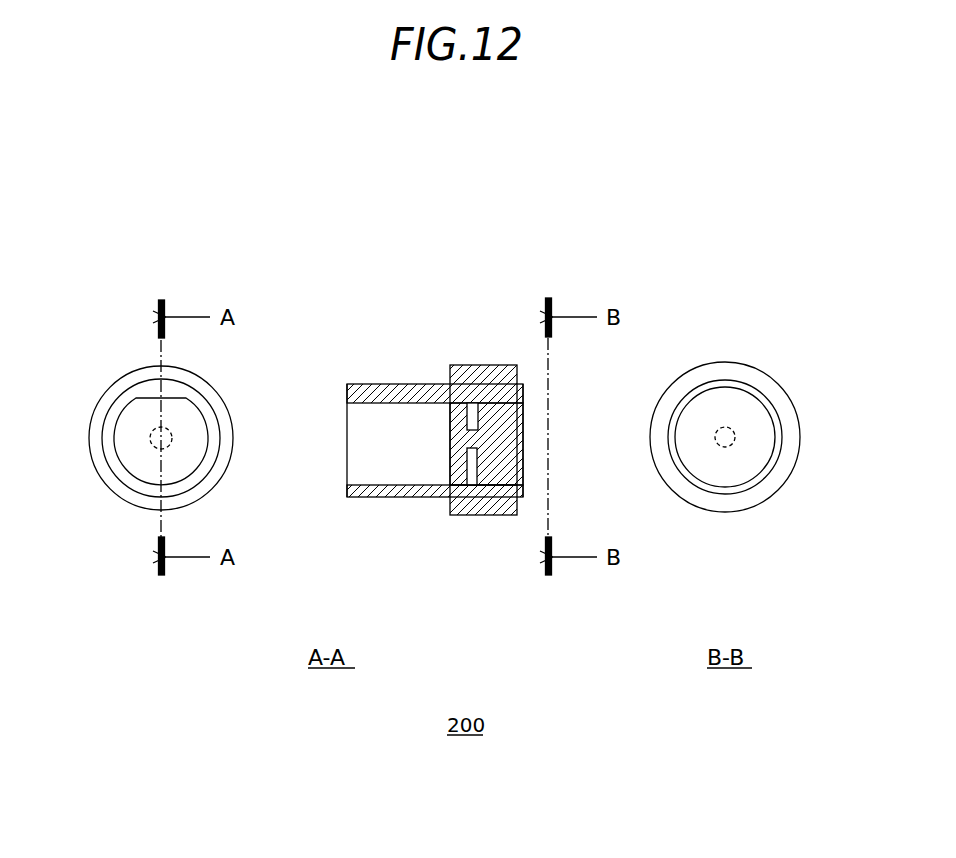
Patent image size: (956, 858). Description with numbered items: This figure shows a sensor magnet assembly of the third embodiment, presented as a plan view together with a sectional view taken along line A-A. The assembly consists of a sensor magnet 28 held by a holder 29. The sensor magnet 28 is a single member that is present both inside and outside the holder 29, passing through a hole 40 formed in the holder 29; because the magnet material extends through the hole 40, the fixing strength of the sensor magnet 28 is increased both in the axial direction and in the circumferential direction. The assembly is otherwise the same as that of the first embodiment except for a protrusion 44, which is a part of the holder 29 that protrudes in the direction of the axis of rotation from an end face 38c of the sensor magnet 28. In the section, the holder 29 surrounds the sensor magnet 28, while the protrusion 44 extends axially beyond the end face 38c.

The sensor magnet 28 is at (222, 417).
The holder 29 is at (117, 465).
The hole 40 is at (714, 437).
The protrusion 44 is at (548, 406).
The end face 38c is at (495, 510).